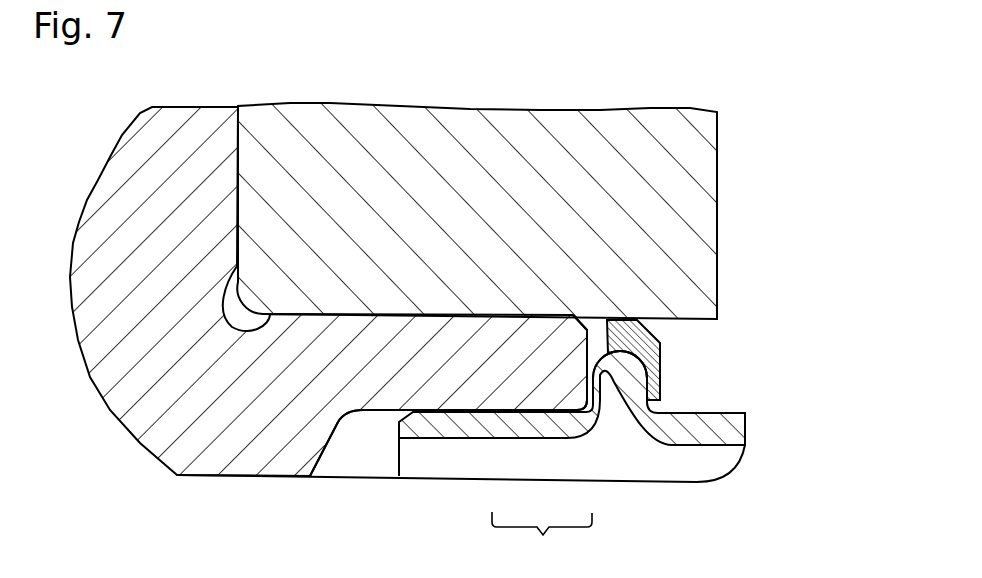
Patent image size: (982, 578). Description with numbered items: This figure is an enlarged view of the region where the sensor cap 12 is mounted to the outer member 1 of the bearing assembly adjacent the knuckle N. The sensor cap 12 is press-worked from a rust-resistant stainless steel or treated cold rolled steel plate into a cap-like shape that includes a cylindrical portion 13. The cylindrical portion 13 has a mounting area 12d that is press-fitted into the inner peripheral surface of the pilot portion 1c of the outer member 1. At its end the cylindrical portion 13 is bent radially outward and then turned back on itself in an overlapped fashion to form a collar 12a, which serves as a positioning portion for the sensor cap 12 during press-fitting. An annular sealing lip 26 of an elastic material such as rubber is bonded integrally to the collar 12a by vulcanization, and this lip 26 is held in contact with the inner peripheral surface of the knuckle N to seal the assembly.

The outer member 1 is at (160, 158).
The pilot portion 1c is at (415, 340).
The knuckle N is at (574, 192).
The annular sealing lip 26 is at (660, 362).
The sensor cap 12 is at (683, 447).
The collar 12a is at (605, 368).
The mounting area 12d is at (493, 437).
The cylindrical portion 13 is at (542, 542).